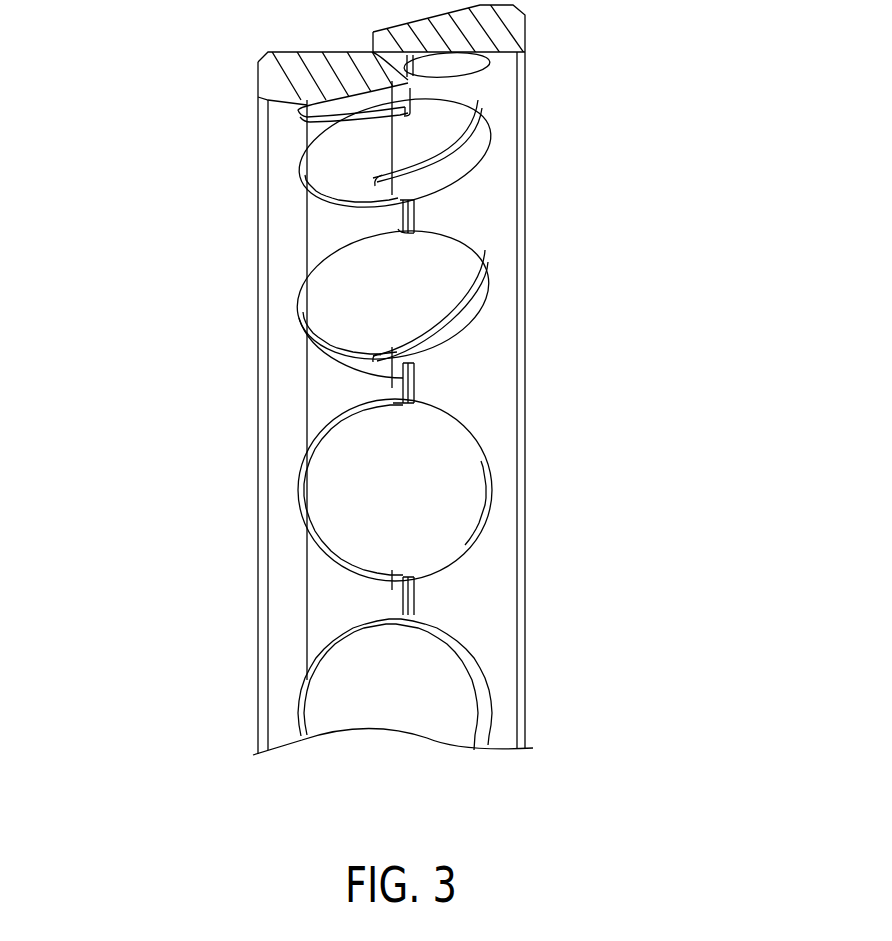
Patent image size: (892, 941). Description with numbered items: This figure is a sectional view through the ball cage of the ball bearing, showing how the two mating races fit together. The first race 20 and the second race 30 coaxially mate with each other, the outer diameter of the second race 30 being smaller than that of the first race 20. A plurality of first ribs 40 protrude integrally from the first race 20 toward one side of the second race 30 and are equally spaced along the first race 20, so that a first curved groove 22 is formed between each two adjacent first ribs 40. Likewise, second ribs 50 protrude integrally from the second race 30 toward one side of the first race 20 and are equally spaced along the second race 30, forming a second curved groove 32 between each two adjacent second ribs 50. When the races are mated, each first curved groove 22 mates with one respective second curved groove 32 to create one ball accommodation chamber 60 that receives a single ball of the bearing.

The first race 20 is at (507, 367).
The second race 30 is at (283, 361).
The first ribs 40 is at (397, 345).
The second ribs 50 is at (390, 394).
The second curved groove 32 is at (330, 511).
The first curved groove 22 is at (457, 493).
The ball accommodation chamber 60 is at (165, 525).